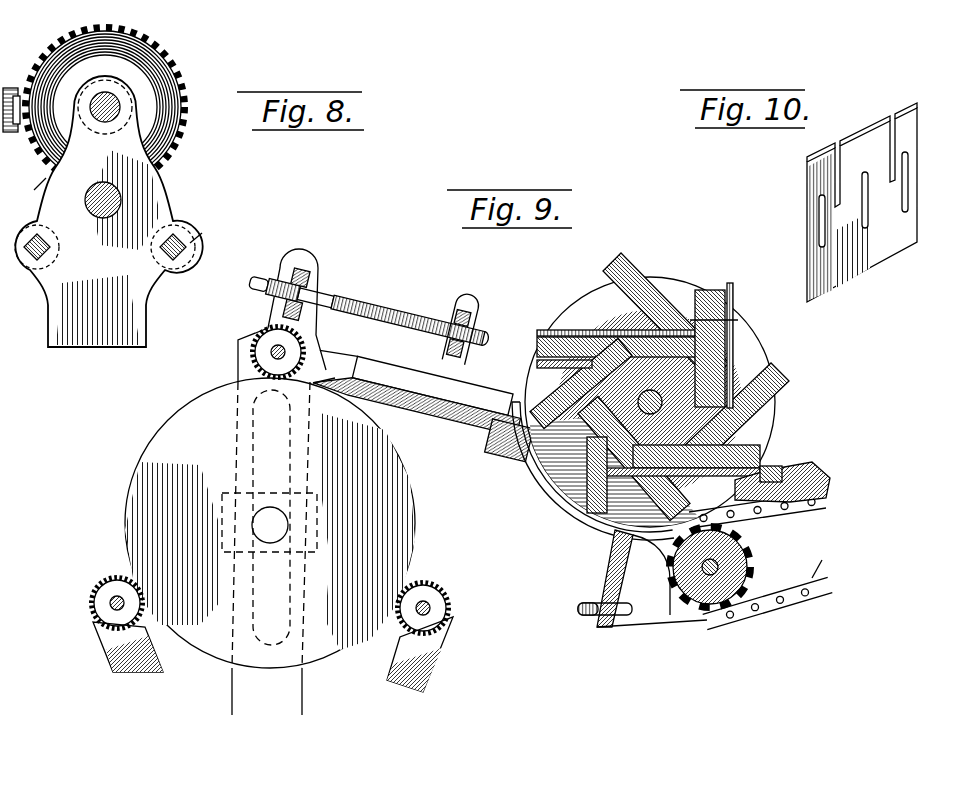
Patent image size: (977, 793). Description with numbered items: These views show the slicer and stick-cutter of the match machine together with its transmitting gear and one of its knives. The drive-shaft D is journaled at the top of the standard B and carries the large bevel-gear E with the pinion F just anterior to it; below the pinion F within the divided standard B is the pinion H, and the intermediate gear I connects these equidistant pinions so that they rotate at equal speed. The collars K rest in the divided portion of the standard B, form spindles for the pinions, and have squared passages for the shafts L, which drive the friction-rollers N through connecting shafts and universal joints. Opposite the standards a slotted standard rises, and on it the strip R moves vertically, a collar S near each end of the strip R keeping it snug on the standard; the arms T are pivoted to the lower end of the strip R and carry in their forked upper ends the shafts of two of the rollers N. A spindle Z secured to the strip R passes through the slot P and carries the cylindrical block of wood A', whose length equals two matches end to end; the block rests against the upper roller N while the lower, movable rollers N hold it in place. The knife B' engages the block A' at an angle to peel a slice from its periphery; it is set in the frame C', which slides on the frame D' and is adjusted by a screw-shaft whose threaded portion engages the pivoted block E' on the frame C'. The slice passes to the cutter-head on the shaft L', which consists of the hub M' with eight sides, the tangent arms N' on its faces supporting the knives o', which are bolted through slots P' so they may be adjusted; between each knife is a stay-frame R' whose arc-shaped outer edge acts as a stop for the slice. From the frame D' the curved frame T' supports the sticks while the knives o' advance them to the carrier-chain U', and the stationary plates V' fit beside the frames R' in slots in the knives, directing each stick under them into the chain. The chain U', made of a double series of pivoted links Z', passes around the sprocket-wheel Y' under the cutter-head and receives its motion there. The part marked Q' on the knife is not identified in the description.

In FIG. 8, the drive-shaft D is at (105, 107).
In FIG. 8, the bevel-gear E is at (105, 107).
In FIG. 8, the pinion F is at (18, 140).
In FIG. 8, the standard B is at (108, 211).
In FIG. 8, the collars K is at (160, 252).
In FIG. 8, the shafts L is at (112, 242).
In FIG. 8, the pinion H is at (203, 233).
In FIG. 8, the intermediate gear I is at (35, 189).
In FIG. 9, the block of wood A' is at (270, 523).
In FIG. 9, the strip R is at (279, 482).
In FIG. 9, the slot P is at (271, 517).
In FIG. 9, the collar S is at (264, 522).
In FIG. 9, the spindle Z is at (270, 525).
In FIG. 9, the friction-rollers N is at (277, 480).
In FIG. 9, the arms T is at (273, 654).
In FIG. 9, the pivoted block E' is at (378, 306).
In FIG. 9, the frame C' is at (414, 381).
In FIG. 9, the frame D' is at (421, 415).
In FIG. 9, the knife B' is at (328, 397).
In FIG. 9, the hub M' is at (650, 402).
In FIG. 9, the tangent arms N' is at (698, 360).
In FIG. 9, the slots P' is at (656, 405).
In FIG. 10, the slots P' is at (865, 199).
In FIG. 9, the knives o' is at (747, 351).
In FIG. 9, the stay-frame R' is at (654, 436).
In FIG. 9, the shaft L' is at (655, 408).
In FIG. 9, the curved frame T' is at (609, 514).
In FIG. 9, the sprocket-wheel Y' is at (724, 567).
In FIG. 9, the carrier-chain U' is at (760, 561).
In FIG. 9, the links Z' is at (824, 567).
In FIG. 9, the plates V' is at (782, 503).
In FIG. 10, the slotted plate Q' is at (862, 202).